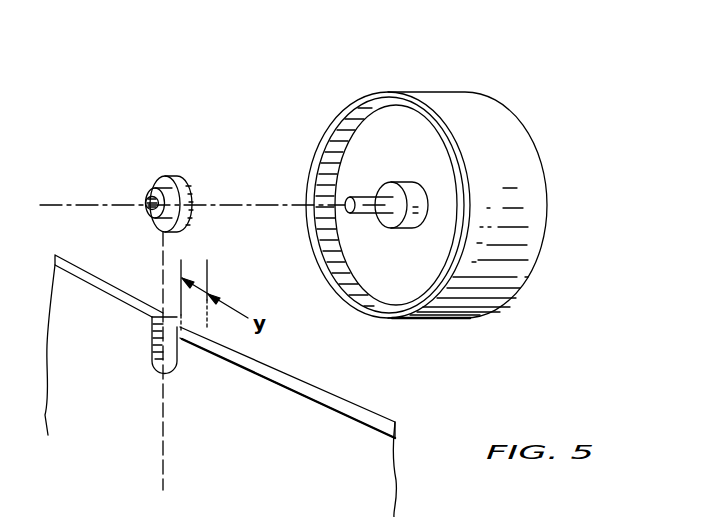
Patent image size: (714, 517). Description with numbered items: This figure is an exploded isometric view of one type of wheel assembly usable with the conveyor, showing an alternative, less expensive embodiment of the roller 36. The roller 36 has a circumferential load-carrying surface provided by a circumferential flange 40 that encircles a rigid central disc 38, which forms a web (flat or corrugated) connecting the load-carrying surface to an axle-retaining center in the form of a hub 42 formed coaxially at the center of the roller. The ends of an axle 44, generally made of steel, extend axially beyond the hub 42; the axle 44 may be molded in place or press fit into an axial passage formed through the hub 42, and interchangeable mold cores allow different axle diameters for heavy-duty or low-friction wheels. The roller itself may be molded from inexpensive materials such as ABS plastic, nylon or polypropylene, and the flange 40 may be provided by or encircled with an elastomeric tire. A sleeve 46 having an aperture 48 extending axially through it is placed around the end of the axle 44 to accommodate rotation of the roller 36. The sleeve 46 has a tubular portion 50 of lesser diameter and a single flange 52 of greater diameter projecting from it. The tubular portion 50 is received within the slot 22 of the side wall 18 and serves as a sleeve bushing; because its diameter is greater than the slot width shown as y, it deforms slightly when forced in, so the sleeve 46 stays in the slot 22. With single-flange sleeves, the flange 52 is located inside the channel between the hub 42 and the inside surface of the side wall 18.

The side wall 18 is at (211, 408).
The slot 22 is at (150, 352).
The roller 36 is at (463, 184).
The central disc 38 is at (390, 140).
The circumferential flange 40 is at (528, 228).
The hub 42 is at (414, 212).
The axle 44 is at (358, 196).
The sleeve 46 is at (152, 173).
The aperture 48 is at (146, 201).
The tubular portion 50 is at (182, 188).
The flange 52 is at (187, 220).